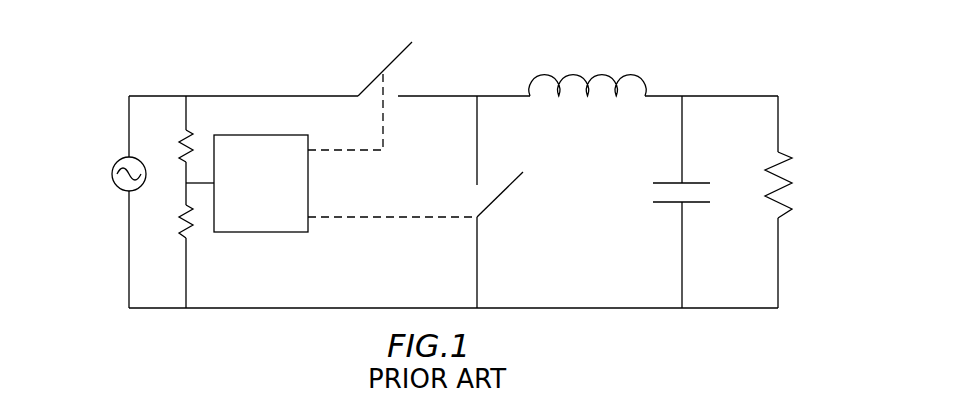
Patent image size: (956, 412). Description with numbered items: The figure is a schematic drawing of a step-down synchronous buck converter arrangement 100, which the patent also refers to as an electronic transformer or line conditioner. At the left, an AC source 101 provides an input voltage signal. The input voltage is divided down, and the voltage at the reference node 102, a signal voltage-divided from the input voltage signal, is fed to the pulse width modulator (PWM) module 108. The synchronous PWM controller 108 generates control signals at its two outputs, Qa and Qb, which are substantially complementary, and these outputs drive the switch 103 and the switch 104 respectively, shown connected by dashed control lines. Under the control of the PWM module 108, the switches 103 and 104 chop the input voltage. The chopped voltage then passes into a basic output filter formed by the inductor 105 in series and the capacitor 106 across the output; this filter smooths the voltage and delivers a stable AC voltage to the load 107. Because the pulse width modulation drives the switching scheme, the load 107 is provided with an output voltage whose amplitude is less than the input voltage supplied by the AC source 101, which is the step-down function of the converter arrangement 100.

The step-down synchronous buck converter arrangement 100 is at (746, 56).
The AC source 101 is at (111, 177).
The reference node 102 is at (200, 187).
The switch 103 is at (383, 71).
The switch 104 is at (505, 193).
The inductor 105 is at (572, 74).
The capacitor 106 is at (688, 196).
The load 107 is at (788, 180).
The pulse width modulator (PWM) module 108 is at (262, 135).